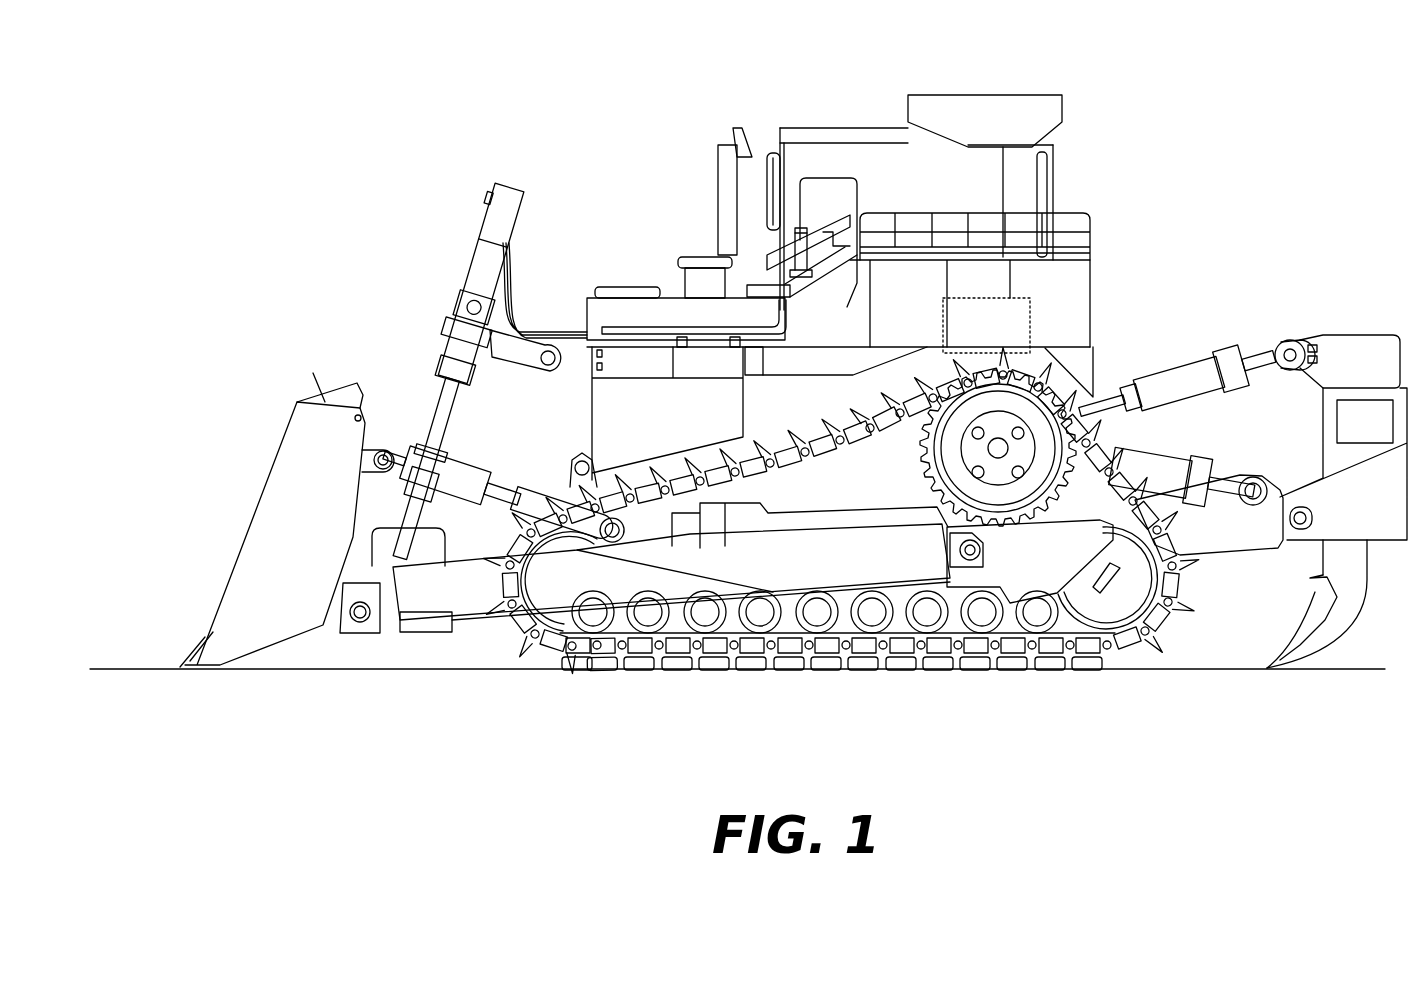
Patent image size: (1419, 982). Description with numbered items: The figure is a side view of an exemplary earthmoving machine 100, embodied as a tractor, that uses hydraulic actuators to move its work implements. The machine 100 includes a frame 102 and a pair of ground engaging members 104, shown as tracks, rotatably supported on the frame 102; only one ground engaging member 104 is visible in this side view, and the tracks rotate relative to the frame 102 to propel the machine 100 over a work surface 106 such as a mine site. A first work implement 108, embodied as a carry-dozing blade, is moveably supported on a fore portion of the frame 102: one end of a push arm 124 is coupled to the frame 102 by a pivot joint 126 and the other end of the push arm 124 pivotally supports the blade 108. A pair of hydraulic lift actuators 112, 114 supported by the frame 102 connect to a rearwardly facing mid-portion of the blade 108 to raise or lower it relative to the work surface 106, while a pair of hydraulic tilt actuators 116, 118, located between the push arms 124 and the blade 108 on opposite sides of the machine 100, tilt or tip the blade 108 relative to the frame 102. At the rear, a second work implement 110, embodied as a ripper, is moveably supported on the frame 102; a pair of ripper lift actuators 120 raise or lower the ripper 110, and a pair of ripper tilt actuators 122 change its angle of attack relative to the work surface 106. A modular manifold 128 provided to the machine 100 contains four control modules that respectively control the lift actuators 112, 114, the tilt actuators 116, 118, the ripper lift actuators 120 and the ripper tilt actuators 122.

The earthmoving machine 100 is at (272, 128).
The frame 102 is at (1027, 558).
The ground engaging member 104 is at (660, 662).
The work surface 106 is at (118, 664).
The first work implement 108 is at (290, 410).
The second work implement 110 is at (1370, 573).
The hydraulic lift actuator 112 is at (481, 373).
The hydraulic lift actuator 114 is at (476, 224).
The hydraulic tilt actuator 116 is at (504, 576).
The hydraulic tilt actuator 118 is at (470, 497).
The ripper lift actuator 120 is at (1165, 450).
The ripper tilt actuator 122 is at (1177, 372).
The push arm 124 is at (823, 570).
The pivot joint 126 is at (965, 560).
The modular manifold 128 is at (1000, 336).